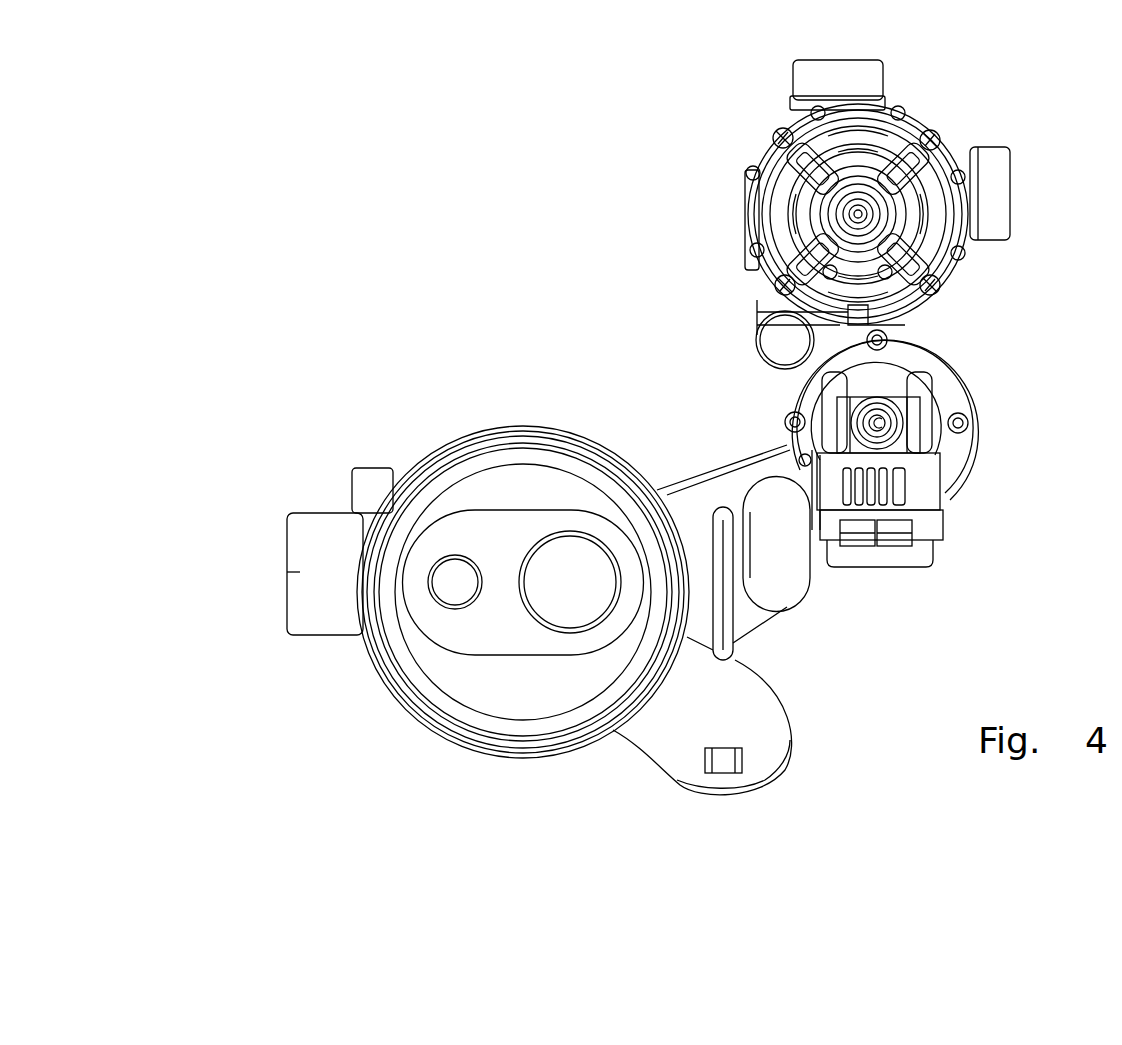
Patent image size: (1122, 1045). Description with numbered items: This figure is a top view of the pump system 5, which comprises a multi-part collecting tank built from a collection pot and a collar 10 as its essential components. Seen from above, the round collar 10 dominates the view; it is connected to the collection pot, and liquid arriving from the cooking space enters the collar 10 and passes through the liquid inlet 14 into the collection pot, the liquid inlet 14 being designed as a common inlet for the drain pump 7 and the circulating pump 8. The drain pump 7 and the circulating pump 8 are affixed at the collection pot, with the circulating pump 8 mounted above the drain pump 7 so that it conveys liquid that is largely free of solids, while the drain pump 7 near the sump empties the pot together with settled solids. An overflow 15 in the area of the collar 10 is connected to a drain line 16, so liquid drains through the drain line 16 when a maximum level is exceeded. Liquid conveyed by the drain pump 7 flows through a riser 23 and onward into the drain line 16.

The pump system 5 is at (390, 223).
The drain pump 7 is at (970, 377).
The circulating pump 8 is at (953, 122).
The collar 10 is at (511, 480).
The liquid inlet 14 is at (573, 527).
The overflow 15 is at (437, 605).
The drain line 16 is at (310, 572).
The riser 23 is at (750, 473).